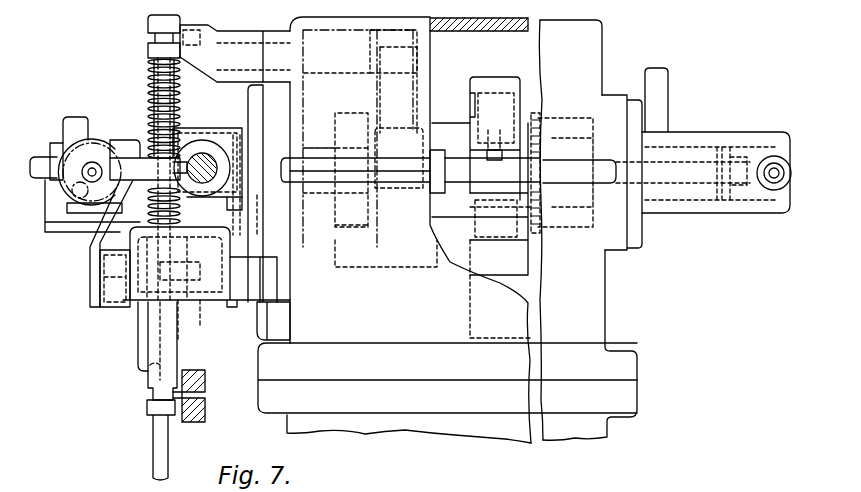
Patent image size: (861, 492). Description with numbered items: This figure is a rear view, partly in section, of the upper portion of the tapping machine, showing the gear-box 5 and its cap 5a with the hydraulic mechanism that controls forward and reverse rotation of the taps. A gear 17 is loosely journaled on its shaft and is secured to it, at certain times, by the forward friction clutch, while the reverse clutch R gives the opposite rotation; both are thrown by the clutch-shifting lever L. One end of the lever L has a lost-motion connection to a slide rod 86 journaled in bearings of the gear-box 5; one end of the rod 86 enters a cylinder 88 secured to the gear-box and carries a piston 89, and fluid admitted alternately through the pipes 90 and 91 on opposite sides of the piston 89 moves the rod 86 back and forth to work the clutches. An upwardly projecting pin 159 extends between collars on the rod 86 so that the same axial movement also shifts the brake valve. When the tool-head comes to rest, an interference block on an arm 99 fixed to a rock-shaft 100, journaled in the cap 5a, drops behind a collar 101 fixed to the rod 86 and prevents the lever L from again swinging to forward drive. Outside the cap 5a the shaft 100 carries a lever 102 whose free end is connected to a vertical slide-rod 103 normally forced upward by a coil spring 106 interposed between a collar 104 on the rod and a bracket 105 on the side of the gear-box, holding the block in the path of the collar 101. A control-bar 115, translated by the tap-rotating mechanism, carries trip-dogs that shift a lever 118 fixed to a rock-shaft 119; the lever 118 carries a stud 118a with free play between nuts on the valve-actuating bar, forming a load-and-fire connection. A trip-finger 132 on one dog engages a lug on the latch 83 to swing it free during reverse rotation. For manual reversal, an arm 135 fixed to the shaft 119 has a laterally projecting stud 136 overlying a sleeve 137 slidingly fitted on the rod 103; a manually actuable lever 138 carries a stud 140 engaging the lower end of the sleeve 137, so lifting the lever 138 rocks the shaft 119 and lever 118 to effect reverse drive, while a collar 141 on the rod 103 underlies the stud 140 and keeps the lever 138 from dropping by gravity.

The gear-box 5 is at (608, 196).
The cap 5a is at (588, 230).
The gear 17 is at (541, 120).
The latch member 83 is at (248, 222).
The slide rod 86 is at (462, 190).
The cylinder 88 is at (732, 138).
The piston 89 is at (723, 200).
The fluid pressure pipe 90 is at (775, 189).
The fluid pressure pipe 91 is at (668, 98).
The arm 99 is at (413, 100).
The rock-shaft 100 is at (352, 73).
The collar 101 is at (443, 155).
The lever 102 is at (216, 32).
The slide-rod 103 is at (181, 97).
The collar 104 is at (147, 49).
The bracket 105 is at (200, 224).
The coil spring 106 is at (152, 101).
The control-bar 115 is at (202, 154).
The lever 118 is at (88, 252).
The stud 118a is at (104, 164).
The rock-shaft 119 is at (99, 279).
The trip-finger 132 is at (242, 202).
The arm 135 is at (200, 320).
The stud 136 is at (138, 311).
The sleeve 137 is at (177, 357).
The manually actuable lever 138 is at (207, 419).
The stud 140 is at (153, 395).
The collar 141 is at (175, 416).
The pin 159 is at (494, 160).
The clutch-shifting lever L is at (508, 134).
The reverse clutch R is at (420, 268).